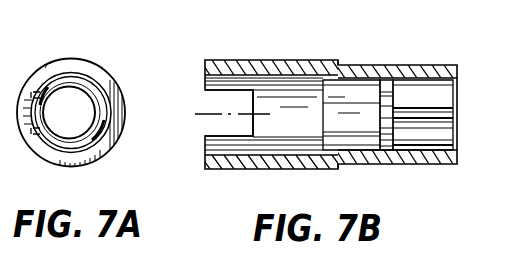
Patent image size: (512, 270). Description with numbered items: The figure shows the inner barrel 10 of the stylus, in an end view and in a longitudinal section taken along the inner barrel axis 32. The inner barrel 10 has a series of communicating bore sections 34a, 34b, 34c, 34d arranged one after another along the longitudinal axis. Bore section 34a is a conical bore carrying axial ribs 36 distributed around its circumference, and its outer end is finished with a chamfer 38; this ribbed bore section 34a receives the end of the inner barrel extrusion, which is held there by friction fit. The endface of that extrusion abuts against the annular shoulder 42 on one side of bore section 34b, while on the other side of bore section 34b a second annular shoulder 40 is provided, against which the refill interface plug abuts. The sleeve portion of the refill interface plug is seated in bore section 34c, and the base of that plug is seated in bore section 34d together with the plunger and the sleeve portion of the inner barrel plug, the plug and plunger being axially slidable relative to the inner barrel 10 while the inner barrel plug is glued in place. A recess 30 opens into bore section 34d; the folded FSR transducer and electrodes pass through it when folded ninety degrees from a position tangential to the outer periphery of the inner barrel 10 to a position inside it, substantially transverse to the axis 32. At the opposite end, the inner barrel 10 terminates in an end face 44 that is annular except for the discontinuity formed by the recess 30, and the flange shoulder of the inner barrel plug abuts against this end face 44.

In FIG. 7A, the inner barrel 10 is at (78, 50).
In FIG. 7B, the inner barrel 10 is at (342, 58).
In FIG. 7B, the recess 30 is at (194, 133).
In FIG. 7B, the inner barrel axis 32 is at (204, 113).
In FIG. 7B, the bore section 34a is at (457, 82).
In FIG. 7B, the bore section 34b is at (386, 92).
In FIG. 7B, the bore section 34c is at (362, 147).
In FIG. 7B, the bore section 34d is at (278, 68).
In FIG. 7B, the axial ribs 36 is at (445, 122).
In FIG. 7B, the chamfer 38 is at (437, 93).
In FIG. 7B, the annular shoulder 40 is at (378, 87).
In FIG. 7B, the annular shoulder 42 is at (390, 142).
In FIG. 7B, the end face 44 is at (203, 64).